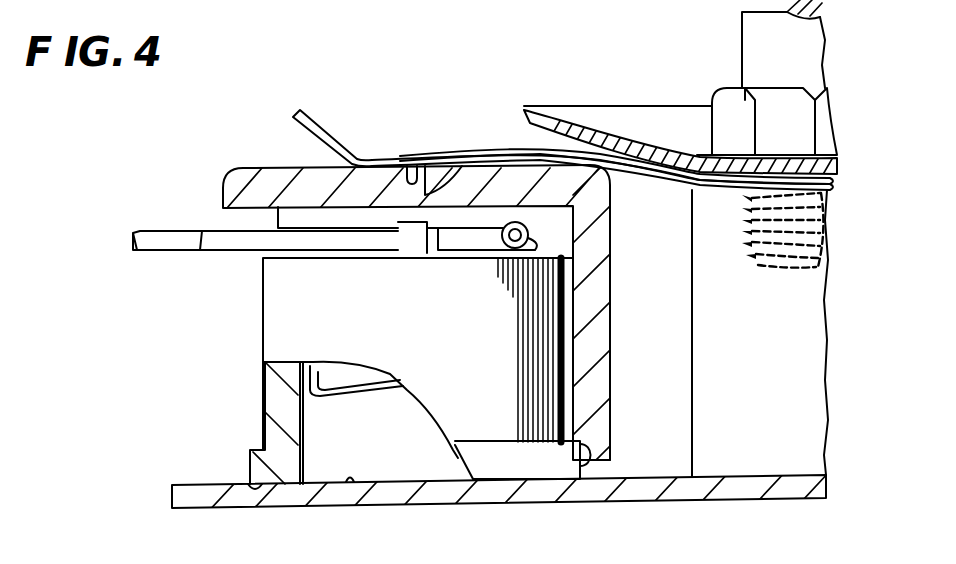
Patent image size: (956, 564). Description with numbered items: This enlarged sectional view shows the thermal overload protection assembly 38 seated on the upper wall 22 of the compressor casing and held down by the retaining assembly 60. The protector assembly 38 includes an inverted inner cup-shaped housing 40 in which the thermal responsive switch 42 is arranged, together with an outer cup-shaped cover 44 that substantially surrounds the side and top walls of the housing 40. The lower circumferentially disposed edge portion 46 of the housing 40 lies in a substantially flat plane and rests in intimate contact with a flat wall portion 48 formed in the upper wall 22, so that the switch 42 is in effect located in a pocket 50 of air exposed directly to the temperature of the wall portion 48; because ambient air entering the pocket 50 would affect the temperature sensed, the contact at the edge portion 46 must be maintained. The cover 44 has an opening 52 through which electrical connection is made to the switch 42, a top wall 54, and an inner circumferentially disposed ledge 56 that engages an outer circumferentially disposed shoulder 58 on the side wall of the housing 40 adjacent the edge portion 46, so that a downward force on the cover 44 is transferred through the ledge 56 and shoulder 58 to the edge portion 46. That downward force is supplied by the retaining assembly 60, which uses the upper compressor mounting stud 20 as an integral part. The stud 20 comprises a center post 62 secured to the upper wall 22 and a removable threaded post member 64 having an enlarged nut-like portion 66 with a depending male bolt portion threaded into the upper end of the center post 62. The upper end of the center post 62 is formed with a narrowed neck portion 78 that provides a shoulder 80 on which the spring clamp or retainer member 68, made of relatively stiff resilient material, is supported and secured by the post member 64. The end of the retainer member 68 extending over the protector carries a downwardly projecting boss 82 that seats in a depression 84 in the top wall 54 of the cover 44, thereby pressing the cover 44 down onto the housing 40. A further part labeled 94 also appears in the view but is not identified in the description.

The mounting stud 20 is at (685, 50).
The upper wall 22 is at (185, 485).
The thermal overload protection assembly 38 is at (492, 321).
The inner cup-shaped housing 40 is at (280, 323).
The thermal responsive switch 42 is at (338, 394).
The outer cover 44 is at (610, 279).
The lower edge portion 46 is at (248, 491).
The flat wall portion 48 is at (348, 481).
The pocket 50 is at (431, 472).
The opening 52 is at (258, 222).
The top wall 54 is at (276, 167).
The inner ledge 56 is at (592, 468).
The outer shoulder 58 is at (265, 449).
The retaining assembly 60 is at (452, 108).
The center post 62 is at (704, 345).
The removable threaded post member 64 is at (752, 26).
The nut-like portion 66 is at (722, 122).
The retainer member 68 is at (506, 150).
The narrowed neck portion 78 is at (702, 187).
The shoulder 80 is at (308, 112).
The downwardly projecting boss 82 is at (409, 180).
The depression 84 is at (425, 186).
The clamp arm 94 is at (524, 108).